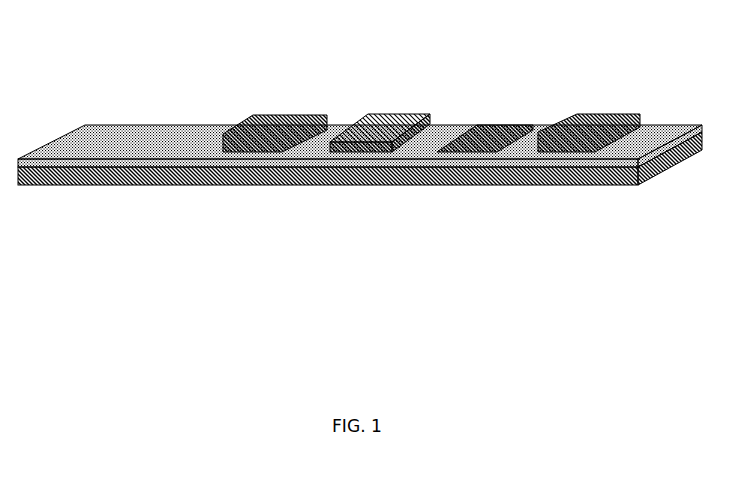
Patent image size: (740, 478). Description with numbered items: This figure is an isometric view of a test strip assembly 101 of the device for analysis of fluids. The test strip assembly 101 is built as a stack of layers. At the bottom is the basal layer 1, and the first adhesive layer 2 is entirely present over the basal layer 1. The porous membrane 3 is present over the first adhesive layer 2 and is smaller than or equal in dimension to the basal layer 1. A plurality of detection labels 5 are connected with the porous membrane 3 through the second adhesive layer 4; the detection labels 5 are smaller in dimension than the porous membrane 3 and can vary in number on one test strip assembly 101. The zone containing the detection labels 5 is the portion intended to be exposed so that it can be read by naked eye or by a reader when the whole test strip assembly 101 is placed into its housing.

The test strip assembly 101 is at (360, 142).
The basal layer 1 is at (108, 186).
The first adhesive layer 2 is at (235, 173).
The porous membrane 3 is at (375, 168).
The second adhesive layer 4 is at (475, 152).
The detection labels 5 is at (563, 143).